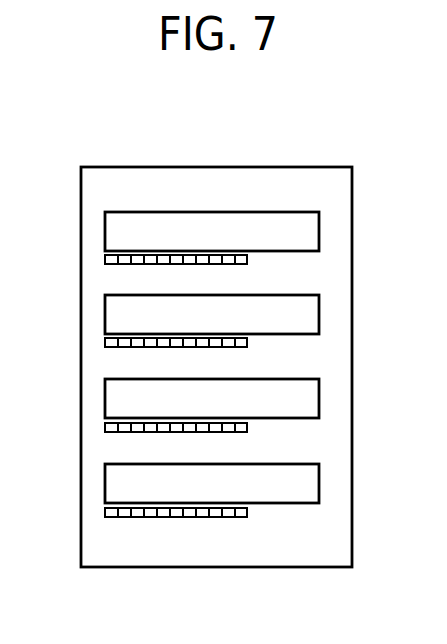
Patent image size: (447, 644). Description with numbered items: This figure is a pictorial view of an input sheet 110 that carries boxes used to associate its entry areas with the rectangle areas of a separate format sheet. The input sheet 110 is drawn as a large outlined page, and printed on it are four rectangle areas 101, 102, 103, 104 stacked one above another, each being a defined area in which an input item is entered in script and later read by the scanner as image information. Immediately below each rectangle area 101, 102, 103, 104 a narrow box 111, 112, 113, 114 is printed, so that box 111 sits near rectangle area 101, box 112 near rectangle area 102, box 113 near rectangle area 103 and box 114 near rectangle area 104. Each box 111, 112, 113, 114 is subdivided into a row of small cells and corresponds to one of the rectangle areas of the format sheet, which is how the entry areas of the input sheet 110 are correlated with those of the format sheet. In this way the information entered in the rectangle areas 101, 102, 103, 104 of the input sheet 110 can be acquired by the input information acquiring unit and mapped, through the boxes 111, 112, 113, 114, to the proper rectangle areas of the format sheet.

The input sheet 110 is at (327, 151).
The rectangle area 101 is at (319, 230).
The rectangle area 102 is at (319, 313).
The rectangle area 103 is at (319, 397).
The rectangle area 104 is at (319, 482).
The box 111 is at (105, 259).
The box 112 is at (105, 342).
The box 113 is at (105, 427).
The box 114 is at (105, 512).